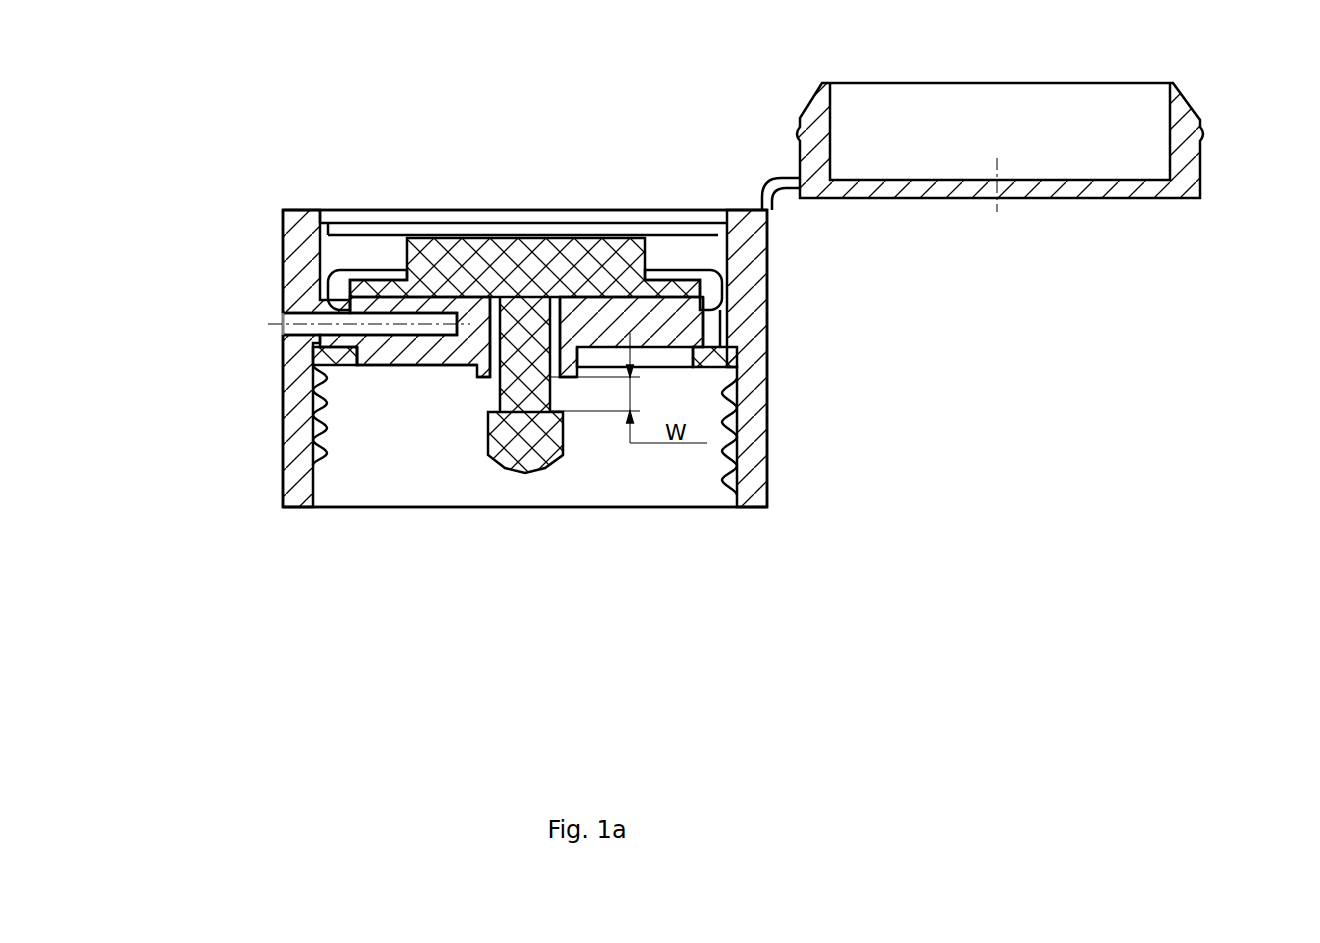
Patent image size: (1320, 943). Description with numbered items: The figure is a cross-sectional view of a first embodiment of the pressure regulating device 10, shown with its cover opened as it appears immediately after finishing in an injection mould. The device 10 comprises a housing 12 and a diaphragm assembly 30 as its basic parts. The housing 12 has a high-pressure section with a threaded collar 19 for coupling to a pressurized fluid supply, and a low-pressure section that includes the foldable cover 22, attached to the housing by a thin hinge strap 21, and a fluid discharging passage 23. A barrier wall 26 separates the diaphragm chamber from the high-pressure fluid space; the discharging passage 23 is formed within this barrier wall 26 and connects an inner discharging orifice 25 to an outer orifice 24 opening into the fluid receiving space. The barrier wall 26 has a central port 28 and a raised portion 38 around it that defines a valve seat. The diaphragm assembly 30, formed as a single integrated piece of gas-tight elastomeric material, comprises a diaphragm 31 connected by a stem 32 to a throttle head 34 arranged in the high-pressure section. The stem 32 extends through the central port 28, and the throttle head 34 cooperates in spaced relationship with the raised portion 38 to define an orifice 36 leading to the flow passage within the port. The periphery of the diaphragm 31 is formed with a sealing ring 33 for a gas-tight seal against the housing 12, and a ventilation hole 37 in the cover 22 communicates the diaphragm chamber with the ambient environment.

The pressure regulating device 10 is at (33, 84).
The housing 12 is at (768, 367).
The threaded collar 19 is at (752, 445).
The hinge strap 21 is at (775, 181).
The cover 22 is at (1182, 142).
The fluid discharging passage 23 is at (300, 329).
The orifice 24 is at (283, 313).
The inner discharging orifice 25 is at (430, 303).
The barrier wall 26 is at (667, 320).
The central port 28 is at (497, 332).
The diaphragm assembly 30 is at (588, 228).
The diaphragm 31 is at (500, 258).
The stem 32 is at (517, 393).
The sealing ring 33 is at (722, 358).
The throttle head 34 is at (547, 457).
The orifice 36 is at (490, 387).
The ventilation hole 37 is at (1000, 192).
The raised portion 38 is at (573, 383).